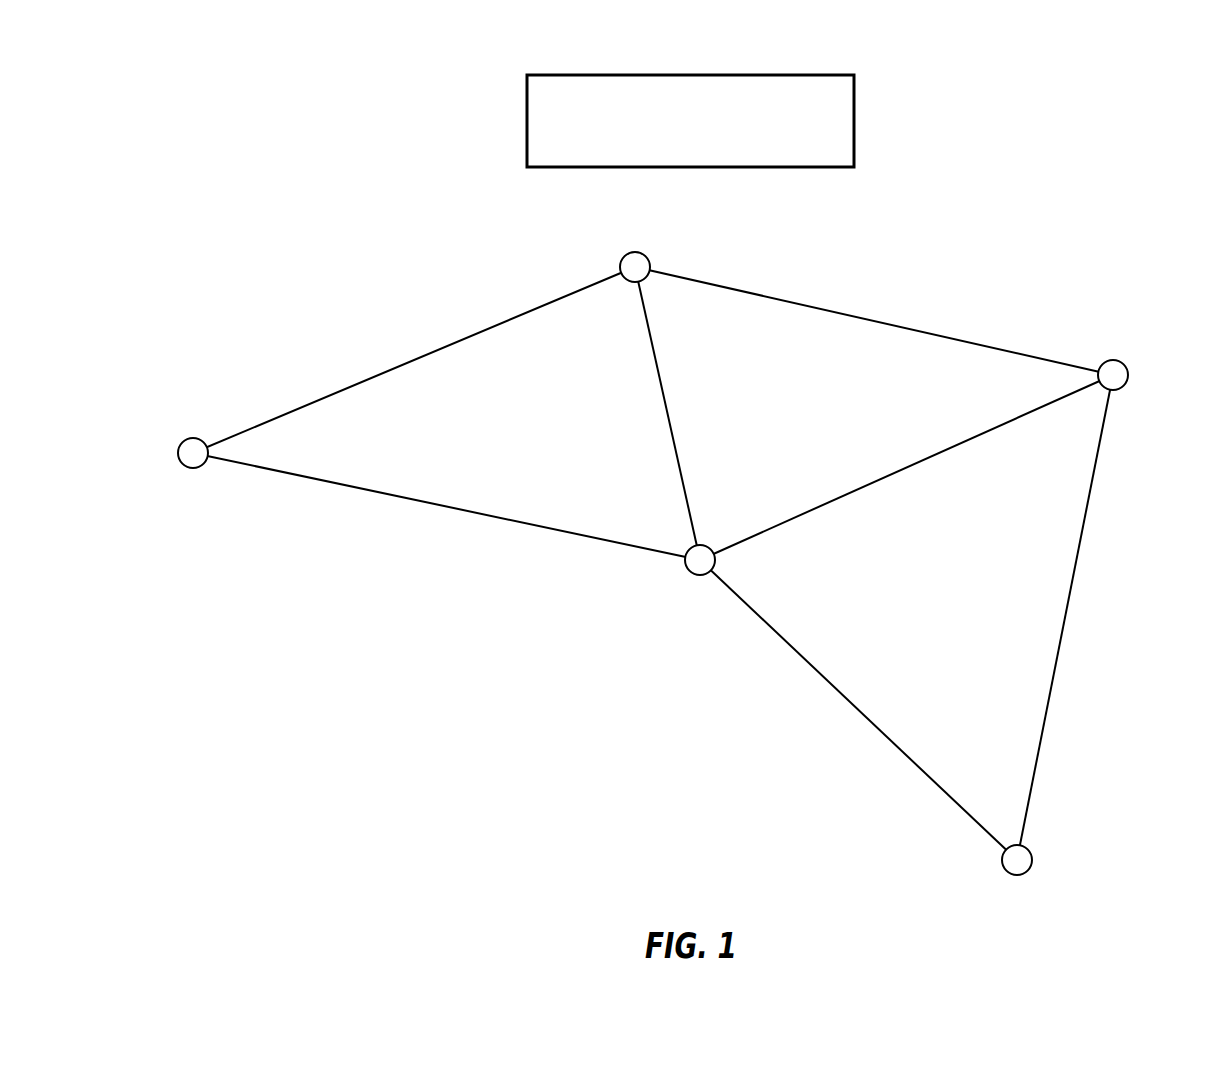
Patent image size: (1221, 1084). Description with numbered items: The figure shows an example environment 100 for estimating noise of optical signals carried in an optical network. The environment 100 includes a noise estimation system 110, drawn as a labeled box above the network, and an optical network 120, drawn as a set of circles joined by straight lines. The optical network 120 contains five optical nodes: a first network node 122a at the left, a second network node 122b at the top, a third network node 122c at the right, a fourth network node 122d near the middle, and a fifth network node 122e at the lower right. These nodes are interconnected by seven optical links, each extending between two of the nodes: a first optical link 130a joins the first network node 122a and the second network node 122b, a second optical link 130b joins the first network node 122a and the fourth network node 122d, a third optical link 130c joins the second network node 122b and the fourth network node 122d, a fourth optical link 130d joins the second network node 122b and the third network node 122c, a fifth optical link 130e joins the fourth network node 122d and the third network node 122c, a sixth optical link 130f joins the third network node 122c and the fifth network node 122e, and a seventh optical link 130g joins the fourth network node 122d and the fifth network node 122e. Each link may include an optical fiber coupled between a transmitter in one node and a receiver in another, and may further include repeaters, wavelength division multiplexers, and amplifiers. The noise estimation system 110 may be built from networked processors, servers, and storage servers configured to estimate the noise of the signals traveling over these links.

The environment 100 is at (1103, 88).
The noise estimation system 110 is at (706, 150).
The optical network 120 is at (200, 338).
The first network node 122a is at (192, 438).
The second network node 122b is at (632, 252).
The third network node 122c is at (1116, 360).
The fourth network node 122d is at (700, 575).
The fifth network node 122e is at (1017, 875).
The first optical link 130a is at (415, 359).
The second optical link 130b is at (447, 509).
The third optical link 130c is at (668, 413).
The fourth optical link 130d is at (873, 322).
The fifth optical link 130e is at (909, 467).
The sixth optical link 130f is at (1067, 618).
The seventh optical link 130g is at (858, 712).